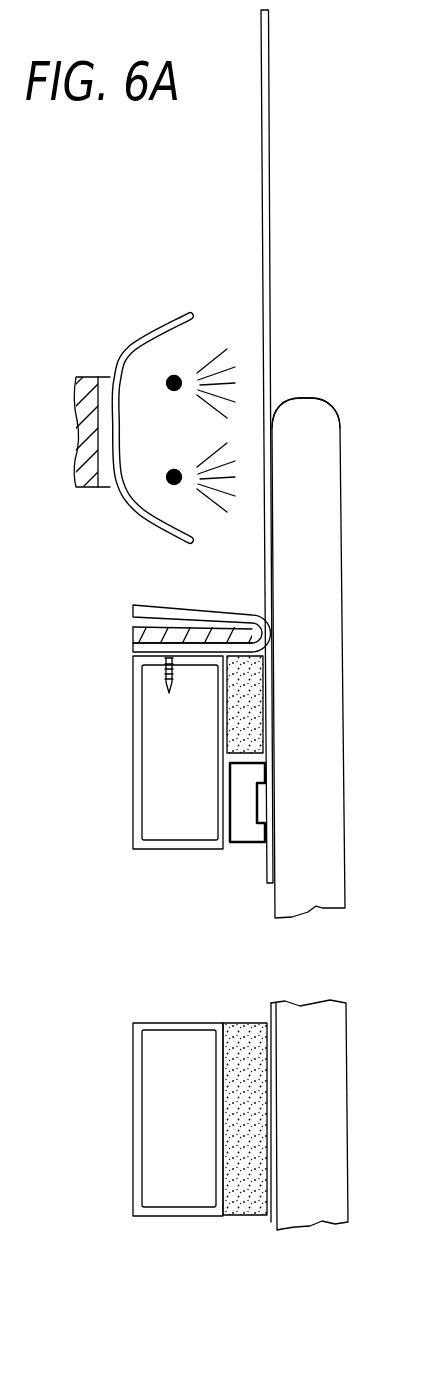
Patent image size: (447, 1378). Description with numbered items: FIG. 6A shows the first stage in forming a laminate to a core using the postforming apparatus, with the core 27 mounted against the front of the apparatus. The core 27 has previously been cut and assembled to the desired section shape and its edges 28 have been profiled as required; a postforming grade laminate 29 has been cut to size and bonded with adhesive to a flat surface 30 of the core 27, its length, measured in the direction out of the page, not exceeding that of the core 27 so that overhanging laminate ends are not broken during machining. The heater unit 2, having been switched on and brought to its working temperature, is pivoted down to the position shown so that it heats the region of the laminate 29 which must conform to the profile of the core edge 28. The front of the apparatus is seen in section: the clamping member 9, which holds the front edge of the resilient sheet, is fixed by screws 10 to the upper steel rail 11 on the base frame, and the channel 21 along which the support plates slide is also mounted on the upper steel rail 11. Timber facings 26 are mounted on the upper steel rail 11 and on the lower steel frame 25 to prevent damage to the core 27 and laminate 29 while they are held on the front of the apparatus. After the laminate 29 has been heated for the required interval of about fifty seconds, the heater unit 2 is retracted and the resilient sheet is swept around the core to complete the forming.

The heater unit 2 is at (118, 322).
The clamping member 9 is at (133, 633).
The screws 10 is at (174, 683).
The upper steel rail 11 is at (133, 749).
The channel 21 is at (242, 833).
The lower steel frame 25 is at (138, 1075).
The timber facings 26 is at (233, 722).
The core 27 is at (330, 597).
The edges 28 is at (309, 398).
The postforming grade laminate 29 is at (271, 164).
The flat surface 30 is at (273, 559).